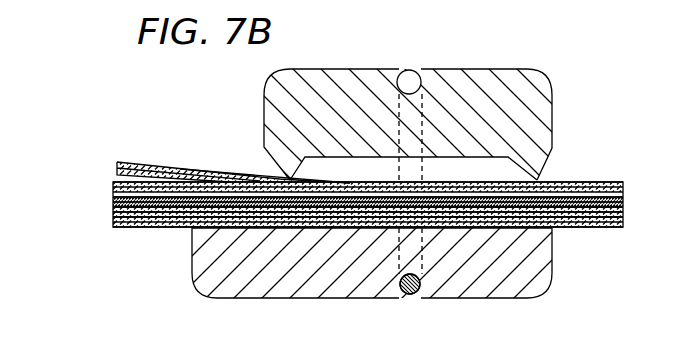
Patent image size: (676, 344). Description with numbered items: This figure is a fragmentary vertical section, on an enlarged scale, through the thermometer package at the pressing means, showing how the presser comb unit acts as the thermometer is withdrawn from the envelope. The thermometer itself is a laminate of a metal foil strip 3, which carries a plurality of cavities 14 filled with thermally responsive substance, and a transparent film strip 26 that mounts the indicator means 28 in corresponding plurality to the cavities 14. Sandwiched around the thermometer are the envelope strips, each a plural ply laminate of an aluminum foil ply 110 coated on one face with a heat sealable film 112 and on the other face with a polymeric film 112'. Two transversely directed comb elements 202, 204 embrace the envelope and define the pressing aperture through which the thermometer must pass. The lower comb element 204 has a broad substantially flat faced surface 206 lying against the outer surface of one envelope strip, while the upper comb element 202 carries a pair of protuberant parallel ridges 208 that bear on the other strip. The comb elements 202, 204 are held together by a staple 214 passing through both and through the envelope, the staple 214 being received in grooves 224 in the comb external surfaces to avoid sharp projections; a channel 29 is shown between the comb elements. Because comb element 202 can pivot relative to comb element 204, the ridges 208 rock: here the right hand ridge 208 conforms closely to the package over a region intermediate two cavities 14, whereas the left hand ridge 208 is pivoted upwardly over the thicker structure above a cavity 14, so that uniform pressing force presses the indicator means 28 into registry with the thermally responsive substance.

The metal foil strip 3 is at (110, 184).
The cavities 14 is at (172, 218).
The transparent film strip 26 is at (170, 182).
The indicator means 28 is at (204, 188).
The channel 29 is at (445, 168).
The aluminum foil ply 110 is at (149, 180).
The heat sealable film 112 is at (347, 208).
The polymeric film 112' is at (343, 170).
The comb element 202 is at (550, 116).
The comb element 204 is at (549, 255).
The flat faced surface 206 is at (294, 229).
The ridges 208 is at (292, 178).
The staple 214 is at (408, 294).
The grooves 224 is at (421, 82).